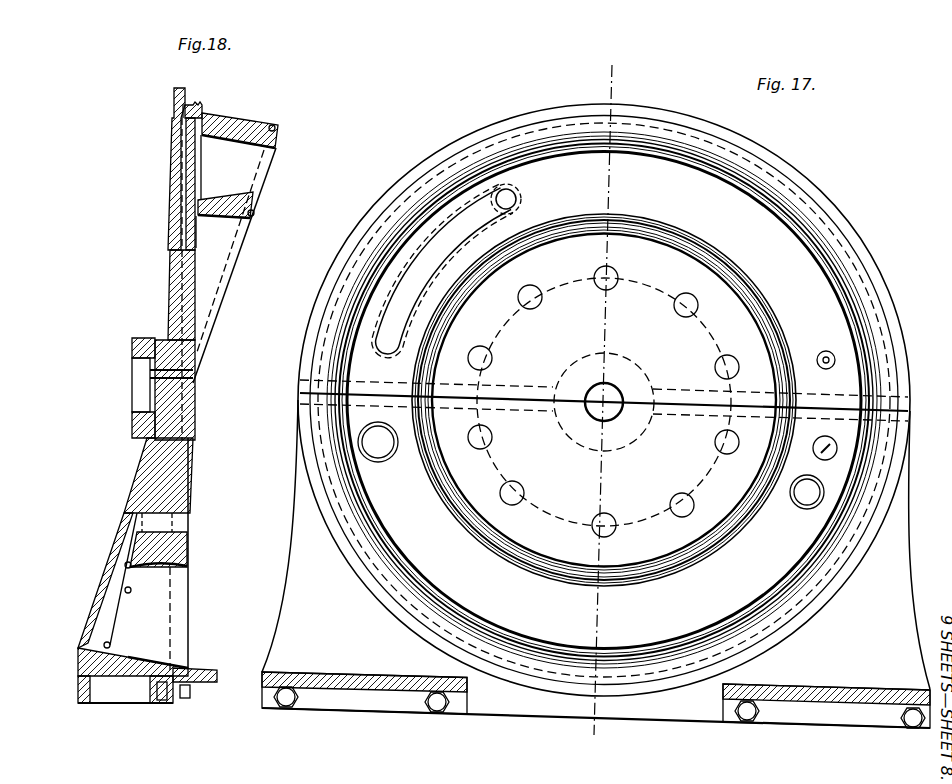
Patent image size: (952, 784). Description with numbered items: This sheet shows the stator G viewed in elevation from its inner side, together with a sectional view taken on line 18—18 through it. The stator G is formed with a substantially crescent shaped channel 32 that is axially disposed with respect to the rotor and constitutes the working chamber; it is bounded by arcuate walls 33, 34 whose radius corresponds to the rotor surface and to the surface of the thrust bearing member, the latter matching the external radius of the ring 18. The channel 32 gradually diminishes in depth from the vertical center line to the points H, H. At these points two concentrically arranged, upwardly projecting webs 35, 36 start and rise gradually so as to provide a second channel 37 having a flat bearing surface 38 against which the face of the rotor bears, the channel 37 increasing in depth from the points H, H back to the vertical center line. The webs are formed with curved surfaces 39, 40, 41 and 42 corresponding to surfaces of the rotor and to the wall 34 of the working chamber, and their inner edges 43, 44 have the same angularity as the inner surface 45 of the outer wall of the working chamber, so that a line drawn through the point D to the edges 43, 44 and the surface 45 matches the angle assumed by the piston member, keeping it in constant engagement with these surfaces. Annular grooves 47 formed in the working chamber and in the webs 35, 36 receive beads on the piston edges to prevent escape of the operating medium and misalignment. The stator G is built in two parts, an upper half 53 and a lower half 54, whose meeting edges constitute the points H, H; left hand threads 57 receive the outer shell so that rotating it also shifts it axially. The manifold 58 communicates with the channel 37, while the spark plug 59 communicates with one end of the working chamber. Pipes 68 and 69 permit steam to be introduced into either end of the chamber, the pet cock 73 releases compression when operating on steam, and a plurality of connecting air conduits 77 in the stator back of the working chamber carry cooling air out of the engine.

In FIG. 17, the ring 18 is at (620, 91).
In FIG. 18, the crescent shaped channel 32 is at (135, 615).
In FIG. 17, the crescent shaped channel 32 is at (567, 637).
In FIG. 18, the arcuate wall 33 is at (155, 567).
In FIG. 17, the arcuate wall 33 is at (548, 577).
In FIG. 18, the arcuate wall 34 is at (132, 660).
In FIG. 17, the arcuate wall 34 is at (503, 655).
In FIG. 18, the web 35 is at (218, 220).
In FIG. 18, the web 36 is at (250, 123).
In FIG. 17, the web 36 is at (657, 135).
In FIG. 18, the second channel 37 is at (212, 158).
In FIG. 18, the flat bearing surface 38 is at (199, 180).
In FIG. 18, the curved surface 39 is at (236, 225).
In FIG. 18, the curved surface 40 is at (233, 200).
In FIG. 18, the curved surface 41 is at (242, 138).
In FIG. 18, the curved surface 42 is at (227, 113).
In FIG. 18, the inner edge 43 is at (248, 220).
In FIG. 18, the inner edge 44 is at (277, 148).
In FIG. 17, the inner edge 44 is at (740, 185).
In FIG. 18, the inner surface 45 is at (123, 592).
In FIG. 18, the annular grooves 47 is at (277, 133).
In FIG. 17, the annular grooves 47 is at (618, 223).
In FIG. 18, the upper half 53 is at (173, 312).
In FIG. 17, the upper half 53 is at (318, 328).
In FIG. 18, the lower half 54 is at (125, 503).
In FIG. 17, the lower half 54 is at (343, 522).
In FIG. 18, the left hand threads 57 is at (188, 108).
In FIG. 17, the left hand threads 57 is at (823, 217).
In FIG. 17, the manifold 58 is at (519, 190).
In FIG. 17, the spark plug 59 is at (837, 452).
In FIG. 17, the pipe 68 is at (383, 463).
In FIG. 17, the pipe 69 is at (803, 507).
In FIG. 17, the pet cock 73 is at (826, 350).
In FIG. 18, the air conduits 77 is at (185, 232).
In FIG. 17, the air conduits 77 is at (533, 294).
In FIG. 18, the point D is at (195, 390).
In FIG. 17, the point D is at (604, 403).
In FIG. 18, the stator G is at (133, 478).
In FIG. 17, the stator G is at (305, 495).
In FIG. 17, the points H is at (366, 399).